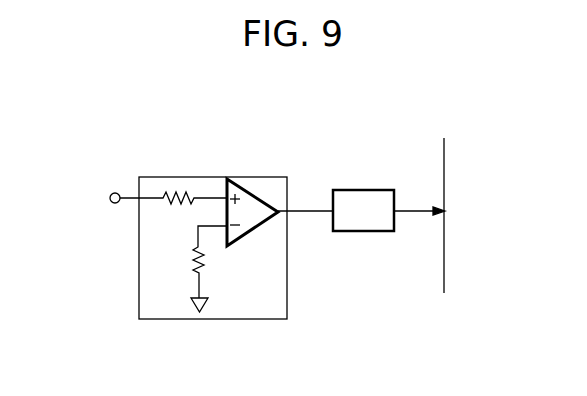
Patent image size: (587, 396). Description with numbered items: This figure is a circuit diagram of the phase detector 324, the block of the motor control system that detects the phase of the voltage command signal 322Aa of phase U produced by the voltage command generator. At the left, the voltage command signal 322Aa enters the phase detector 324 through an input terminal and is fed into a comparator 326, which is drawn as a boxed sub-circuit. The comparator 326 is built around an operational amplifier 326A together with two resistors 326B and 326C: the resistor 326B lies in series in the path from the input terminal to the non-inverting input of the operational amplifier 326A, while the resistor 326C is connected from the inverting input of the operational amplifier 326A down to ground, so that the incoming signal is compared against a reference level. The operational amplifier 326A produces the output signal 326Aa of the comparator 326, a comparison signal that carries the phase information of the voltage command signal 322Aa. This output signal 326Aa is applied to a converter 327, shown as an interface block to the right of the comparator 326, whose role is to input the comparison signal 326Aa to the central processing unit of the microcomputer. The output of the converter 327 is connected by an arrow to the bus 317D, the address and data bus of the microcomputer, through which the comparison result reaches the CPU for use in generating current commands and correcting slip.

The phase detector 324 is at (137, 117).
The voltage command signal 322Aa is at (96, 191).
The comparator 326 is at (208, 162).
The operational amplifier 326A is at (264, 203).
The resistor 326B is at (166, 203).
The resistor 326C is at (204, 258).
The output signal 326Aa is at (322, 214).
The converter 327 is at (368, 190).
The bus 317D is at (444, 168).